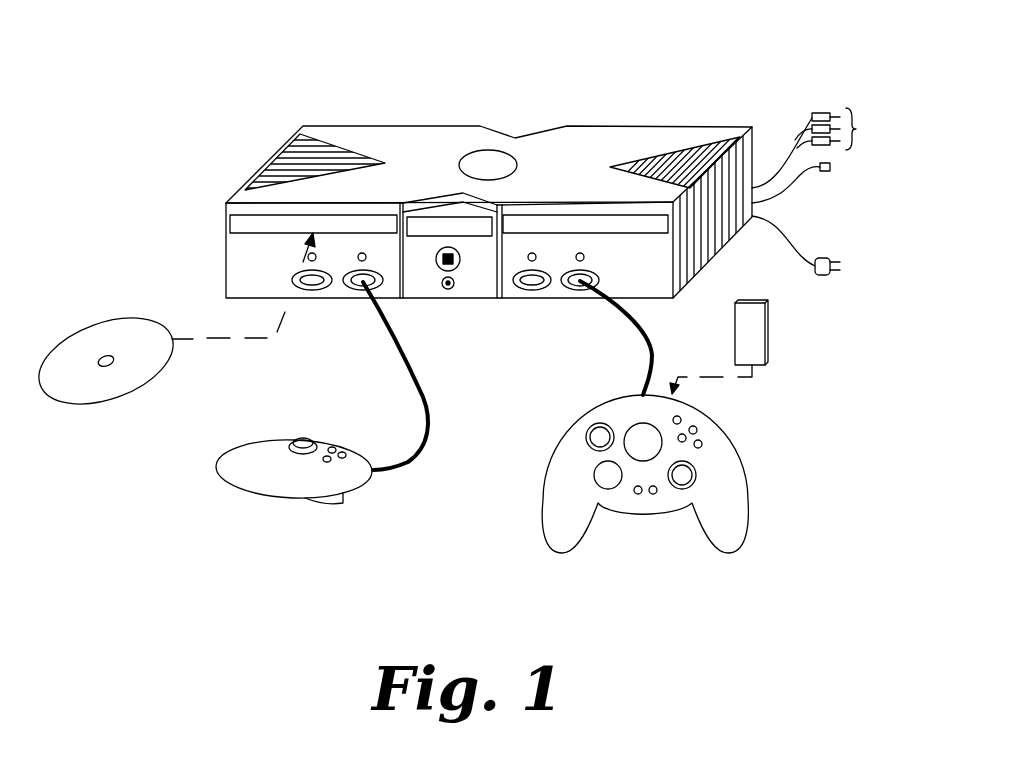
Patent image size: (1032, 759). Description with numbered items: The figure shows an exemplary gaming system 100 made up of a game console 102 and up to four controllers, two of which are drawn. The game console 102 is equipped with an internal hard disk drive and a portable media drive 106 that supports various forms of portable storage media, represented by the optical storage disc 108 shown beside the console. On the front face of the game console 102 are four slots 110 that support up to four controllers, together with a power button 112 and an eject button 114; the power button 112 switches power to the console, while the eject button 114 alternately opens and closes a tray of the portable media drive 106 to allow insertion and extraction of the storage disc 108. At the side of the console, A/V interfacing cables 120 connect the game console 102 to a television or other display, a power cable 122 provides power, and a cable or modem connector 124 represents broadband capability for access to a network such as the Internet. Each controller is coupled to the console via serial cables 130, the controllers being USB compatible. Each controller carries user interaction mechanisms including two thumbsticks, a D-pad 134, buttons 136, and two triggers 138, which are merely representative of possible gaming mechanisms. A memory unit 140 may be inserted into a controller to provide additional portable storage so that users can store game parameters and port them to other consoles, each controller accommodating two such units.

The gaming system 100 is at (641, 42).
The game console 102 is at (343, 126).
The portable media drive 106 is at (240, 222).
The optical storage disc 108 is at (118, 400).
The slots 110 is at (360, 288).
The power button 112 is at (448, 289).
The eject button 114 is at (448, 247).
The A/V interfacing cables 120 is at (813, 110).
The power cable 122 is at (813, 275).
The cable or modem connector 124 is at (793, 188).
The serial cables 130 is at (432, 392).
The D-pad 134 is at (594, 475).
The buttons 136 is at (693, 430).
The triggers 138 is at (343, 500).
The memory unit 140 is at (765, 332).